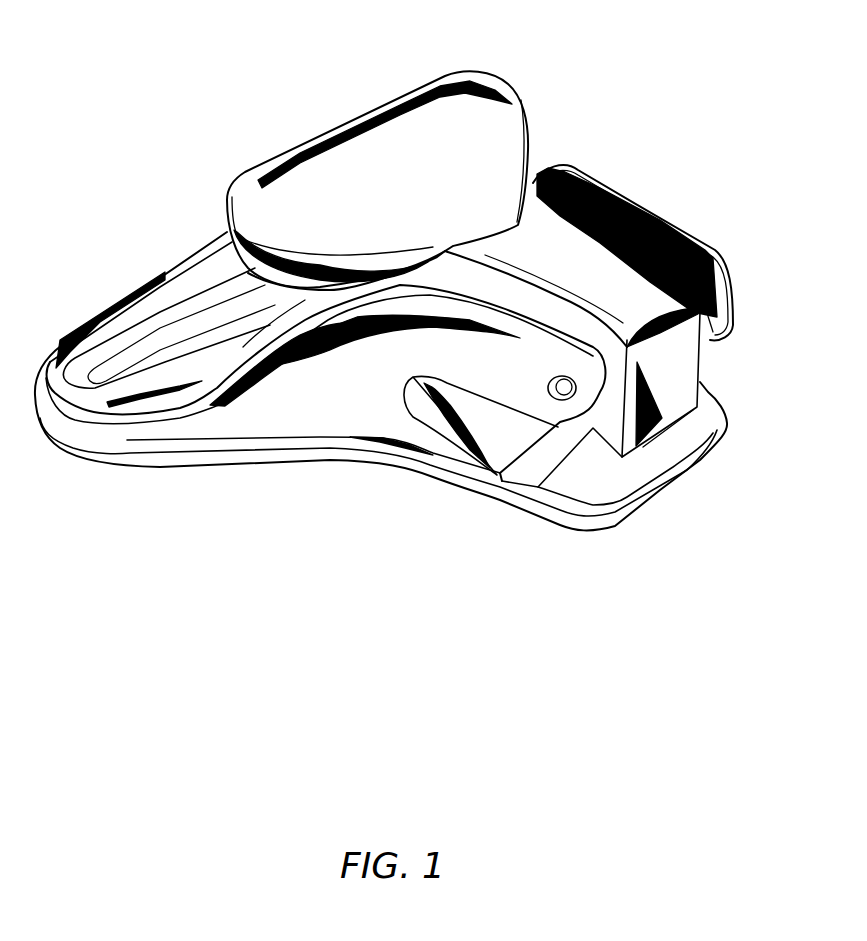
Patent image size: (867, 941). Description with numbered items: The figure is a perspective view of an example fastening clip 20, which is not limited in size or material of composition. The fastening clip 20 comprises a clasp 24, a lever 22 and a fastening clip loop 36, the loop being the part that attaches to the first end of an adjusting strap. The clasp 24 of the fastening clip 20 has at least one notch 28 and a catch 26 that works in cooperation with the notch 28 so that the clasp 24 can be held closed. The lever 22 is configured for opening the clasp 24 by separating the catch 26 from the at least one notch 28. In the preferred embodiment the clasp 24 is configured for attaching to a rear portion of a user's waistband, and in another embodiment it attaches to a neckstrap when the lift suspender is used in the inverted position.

The fastening clip 20 is at (425, 291).
The lever 22 is at (490, 112).
The clasp 24 is at (425, 365).
The catch 26 is at (690, 345).
The notch 28 is at (535, 462).
The fastening clip loop 36 is at (117, 353).